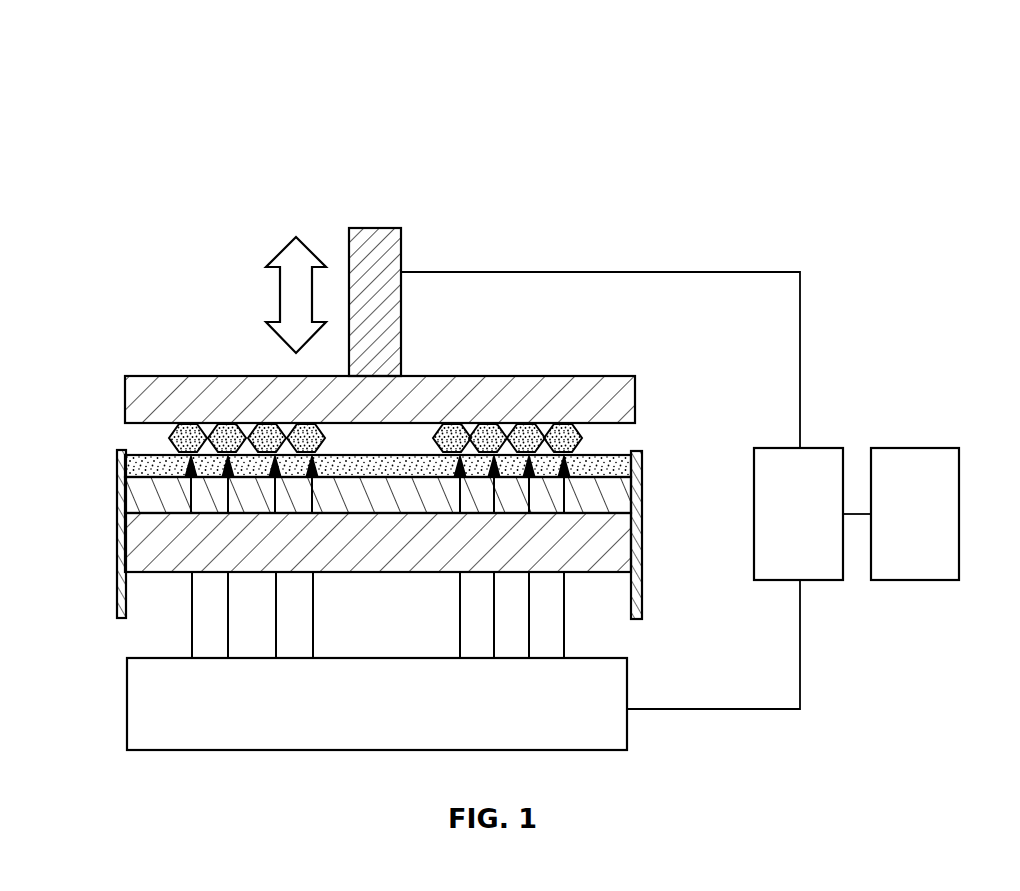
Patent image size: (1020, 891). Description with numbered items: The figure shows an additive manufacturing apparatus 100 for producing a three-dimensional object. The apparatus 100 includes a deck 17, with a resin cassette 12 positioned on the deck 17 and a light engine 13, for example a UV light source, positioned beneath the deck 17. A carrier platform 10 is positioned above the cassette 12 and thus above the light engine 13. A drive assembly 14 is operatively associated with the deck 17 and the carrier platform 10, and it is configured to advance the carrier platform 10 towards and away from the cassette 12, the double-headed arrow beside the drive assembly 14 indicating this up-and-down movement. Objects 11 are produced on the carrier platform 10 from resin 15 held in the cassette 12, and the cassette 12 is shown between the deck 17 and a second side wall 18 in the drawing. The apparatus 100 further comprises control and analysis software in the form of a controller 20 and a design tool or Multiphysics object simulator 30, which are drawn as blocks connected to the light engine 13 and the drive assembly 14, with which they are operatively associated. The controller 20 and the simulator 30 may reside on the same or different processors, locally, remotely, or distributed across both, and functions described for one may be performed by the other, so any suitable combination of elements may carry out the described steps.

The additive manufacturing apparatus 100 is at (172, 110).
The carrier platform 10 is at (140, 403).
The objects 11 is at (227, 440).
The resin cassette 12 is at (134, 497).
The light engine 13 is at (363, 718).
The drive assembly 14 is at (373, 238).
The resin 15 is at (607, 465).
The deck 17 is at (125, 560).
The right side wall 18 is at (645, 557).
The controller 20 is at (785, 526).
The Multiphysics object simulator 30 is at (901, 526).